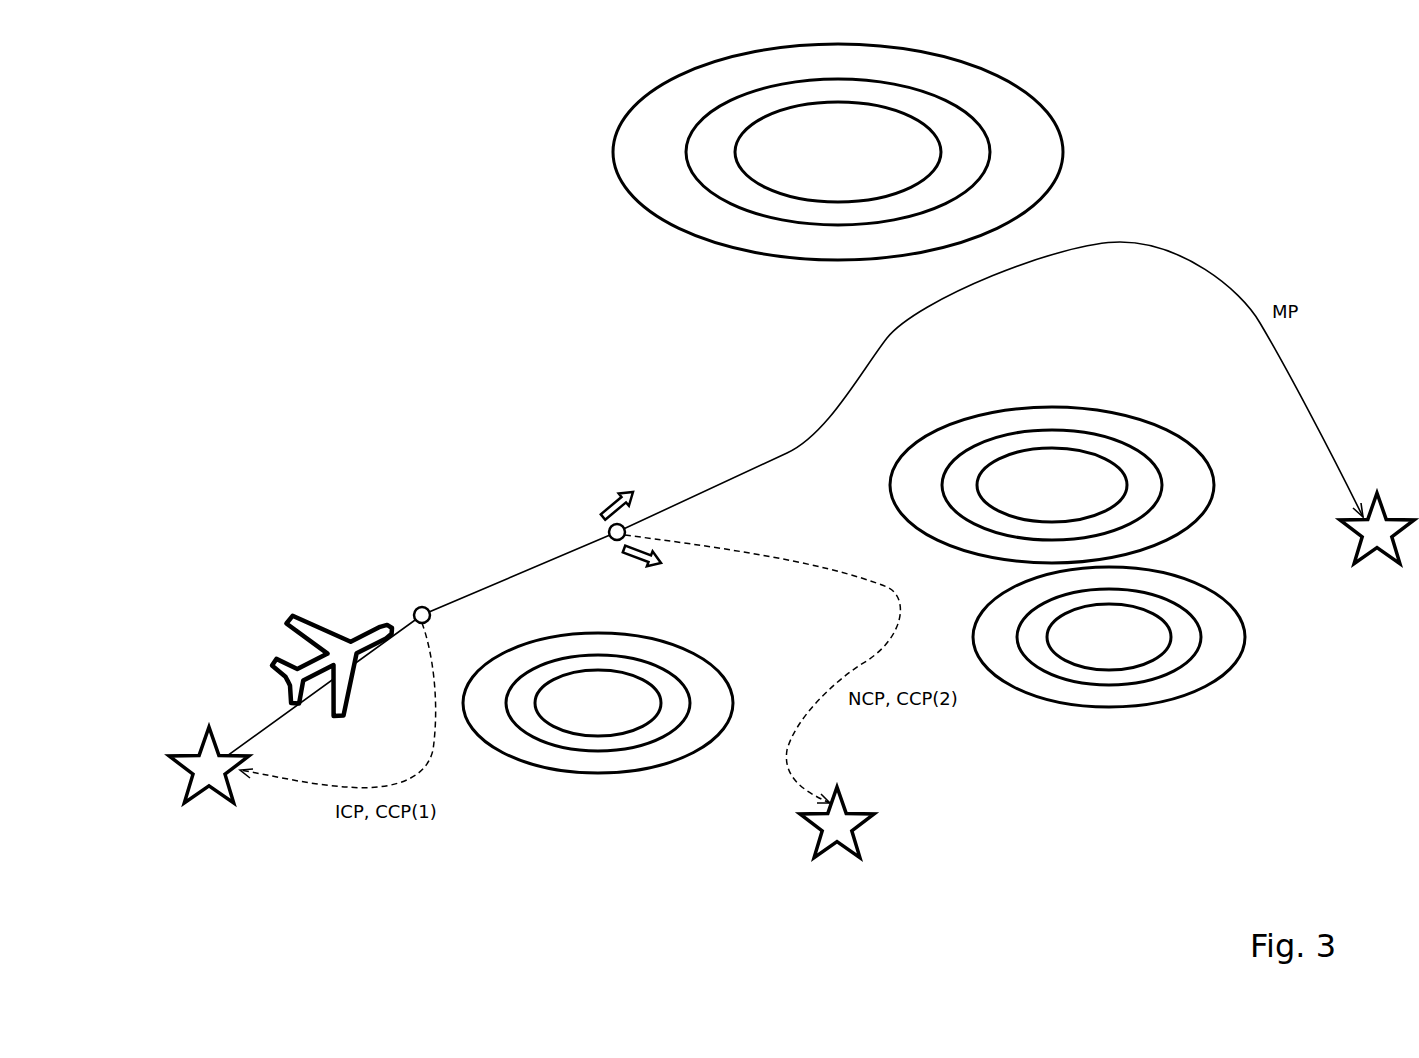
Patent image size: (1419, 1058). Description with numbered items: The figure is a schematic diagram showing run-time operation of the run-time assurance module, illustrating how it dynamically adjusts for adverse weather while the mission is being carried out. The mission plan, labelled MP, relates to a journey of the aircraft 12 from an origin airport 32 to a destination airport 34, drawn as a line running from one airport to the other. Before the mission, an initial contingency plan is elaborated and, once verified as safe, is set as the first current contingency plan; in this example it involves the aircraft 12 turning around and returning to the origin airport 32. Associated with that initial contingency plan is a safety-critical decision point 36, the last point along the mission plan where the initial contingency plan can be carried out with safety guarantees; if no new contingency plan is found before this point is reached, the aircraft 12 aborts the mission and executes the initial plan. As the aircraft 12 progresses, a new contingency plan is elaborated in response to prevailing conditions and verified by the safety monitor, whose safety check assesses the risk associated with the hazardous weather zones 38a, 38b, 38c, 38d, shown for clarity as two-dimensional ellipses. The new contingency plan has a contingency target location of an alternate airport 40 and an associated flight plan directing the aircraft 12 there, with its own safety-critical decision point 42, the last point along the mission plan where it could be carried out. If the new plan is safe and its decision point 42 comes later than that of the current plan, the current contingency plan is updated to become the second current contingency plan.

The aircraft 12 is at (322, 600).
The origin airport 32 is at (193, 714).
The destination airport 34 is at (1377, 590).
The safety-critical decision point 36 is at (423, 607).
The hazardous weather zone 38a is at (591, 797).
The hazardous weather zone 38b is at (1081, 380).
The hazardous weather zone 38c is at (1111, 740).
The hazardous weather zone 38d is at (577, 246).
The alternate airport 40 is at (825, 869).
The safety-critical decision point 42 is at (607, 530).